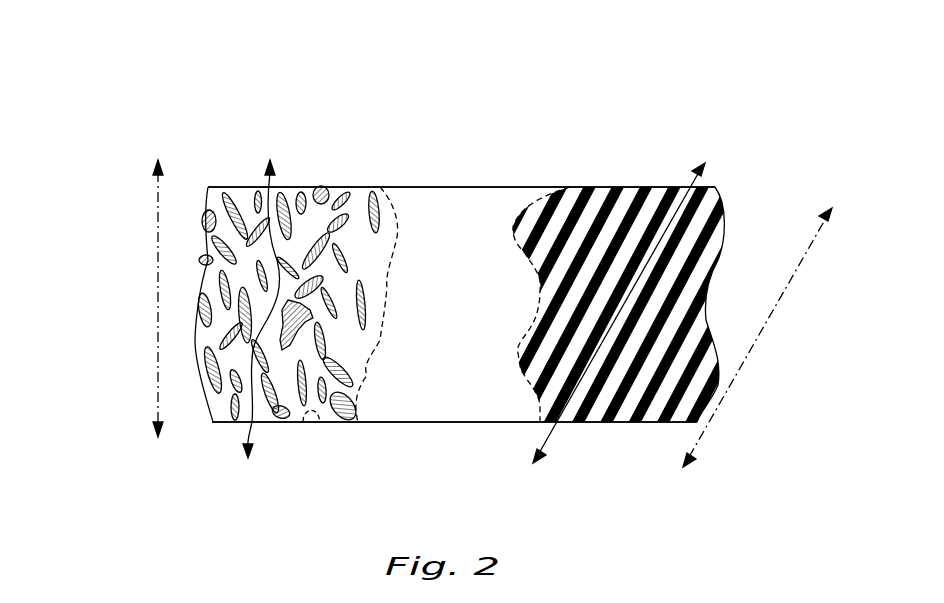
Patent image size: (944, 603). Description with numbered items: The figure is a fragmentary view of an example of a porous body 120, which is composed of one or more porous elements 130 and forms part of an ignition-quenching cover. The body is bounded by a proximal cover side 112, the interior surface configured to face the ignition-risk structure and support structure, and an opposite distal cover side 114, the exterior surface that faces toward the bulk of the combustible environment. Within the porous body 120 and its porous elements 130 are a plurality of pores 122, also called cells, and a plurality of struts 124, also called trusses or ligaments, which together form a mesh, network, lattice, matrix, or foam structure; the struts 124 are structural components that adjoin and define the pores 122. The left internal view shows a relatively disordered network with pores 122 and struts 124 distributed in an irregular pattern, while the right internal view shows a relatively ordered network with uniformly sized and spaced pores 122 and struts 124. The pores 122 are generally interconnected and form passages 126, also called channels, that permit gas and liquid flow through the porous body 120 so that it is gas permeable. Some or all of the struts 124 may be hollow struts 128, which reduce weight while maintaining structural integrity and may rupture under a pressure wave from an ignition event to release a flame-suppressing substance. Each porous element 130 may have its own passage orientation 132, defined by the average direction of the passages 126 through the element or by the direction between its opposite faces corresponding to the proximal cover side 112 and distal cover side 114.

The porous body 120 is at (179, 51).
The porous element 130 is at (205, 156).
The distal cover side 114 is at (415, 187).
The proximal cover side 112 is at (418, 422).
The pores 122 is at (318, 240).
The struts 124 is at (318, 190).
The hollow struts 128 is at (570, 195).
The passages 126 is at (243, 437).
The passage orientation 132 is at (158, 350).